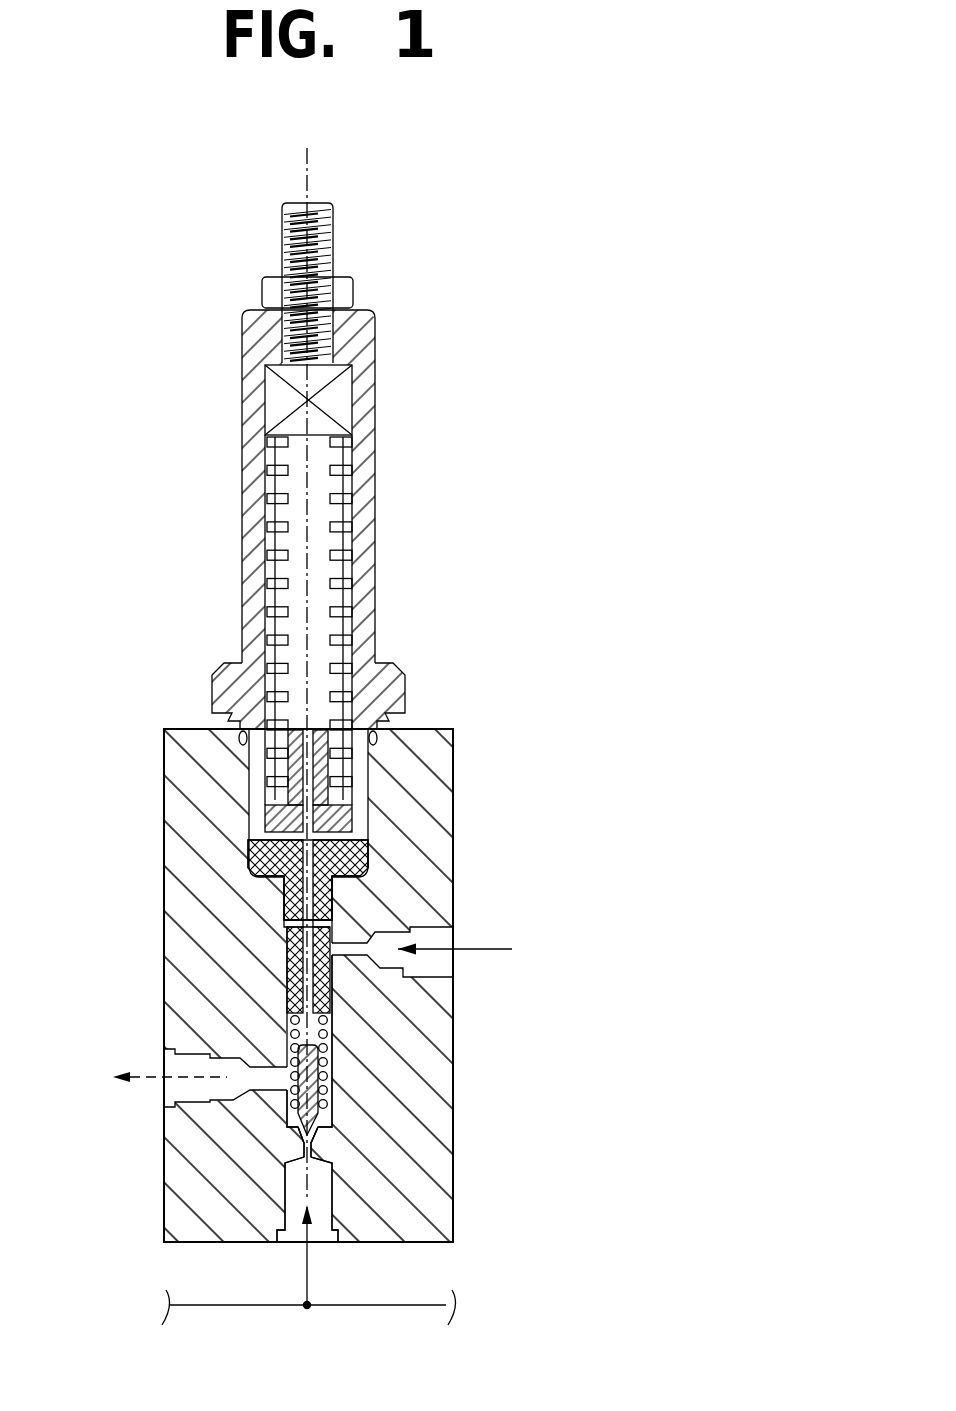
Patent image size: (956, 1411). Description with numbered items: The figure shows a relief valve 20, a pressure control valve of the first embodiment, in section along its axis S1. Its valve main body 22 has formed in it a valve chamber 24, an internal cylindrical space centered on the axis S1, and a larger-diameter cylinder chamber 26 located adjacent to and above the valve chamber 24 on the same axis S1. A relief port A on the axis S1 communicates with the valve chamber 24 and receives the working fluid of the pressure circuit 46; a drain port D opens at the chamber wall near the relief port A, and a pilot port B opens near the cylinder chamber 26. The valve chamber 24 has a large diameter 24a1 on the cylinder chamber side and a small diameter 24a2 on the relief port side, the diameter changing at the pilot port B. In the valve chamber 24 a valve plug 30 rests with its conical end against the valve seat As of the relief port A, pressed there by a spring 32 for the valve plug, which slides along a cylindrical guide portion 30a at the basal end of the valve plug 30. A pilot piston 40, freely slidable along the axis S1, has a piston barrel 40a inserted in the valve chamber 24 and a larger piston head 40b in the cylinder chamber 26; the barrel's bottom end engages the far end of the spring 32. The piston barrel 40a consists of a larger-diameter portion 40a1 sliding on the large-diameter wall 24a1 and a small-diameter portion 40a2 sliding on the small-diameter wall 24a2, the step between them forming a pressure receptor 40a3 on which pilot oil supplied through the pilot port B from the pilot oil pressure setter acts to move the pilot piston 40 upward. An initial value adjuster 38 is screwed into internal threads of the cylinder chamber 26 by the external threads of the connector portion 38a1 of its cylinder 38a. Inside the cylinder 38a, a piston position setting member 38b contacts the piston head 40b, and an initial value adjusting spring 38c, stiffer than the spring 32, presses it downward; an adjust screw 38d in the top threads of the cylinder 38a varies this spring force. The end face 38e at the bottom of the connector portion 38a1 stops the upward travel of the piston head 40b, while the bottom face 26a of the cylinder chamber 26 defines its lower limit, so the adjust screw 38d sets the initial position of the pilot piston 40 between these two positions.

The relief valve 20 is at (150, 690).
The axis S1 is at (307, 162).
The valve main body 22 is at (183, 753).
The initial value adjuster 38 is at (364, 270).
The adjust screw 38d is at (332, 318).
The cylinder 38a is at (358, 416).
The piston position setting member 38b is at (330, 723).
The initial value adjusting spring 38c is at (343, 497).
The connector portion 38a1 is at (370, 752).
The end face 38e is at (362, 815).
The cylinder chamber 26 is at (250, 840).
The bottom face 26a is at (248, 862).
The pilot piston 40 is at (560, 795).
The piston head 40b is at (368, 855).
The piston barrel 40a is at (333, 890).
The larger-diameter portion 40a1 is at (284, 900).
The pressure receptor 40a3 is at (286, 953).
The small-diameter portion 40a2 is at (287, 987).
The pilot port B is at (432, 918).
The drain port D is at (245, 1073).
The valve chamber 24 is at (570, 1000).
The large-diameter wall 24a1 is at (345, 990).
The small-diameter wall 24a2 is at (345, 1022).
The spring for the valve plug 32 is at (335, 1075).
The valve plug 30 is at (290, 1103).
The cylindrical guide portion 30a is at (328, 1120).
The valve seat As is at (290, 1120).
The relief port A is at (320, 1160).
The pressure circuit 46 is at (308, 1282).